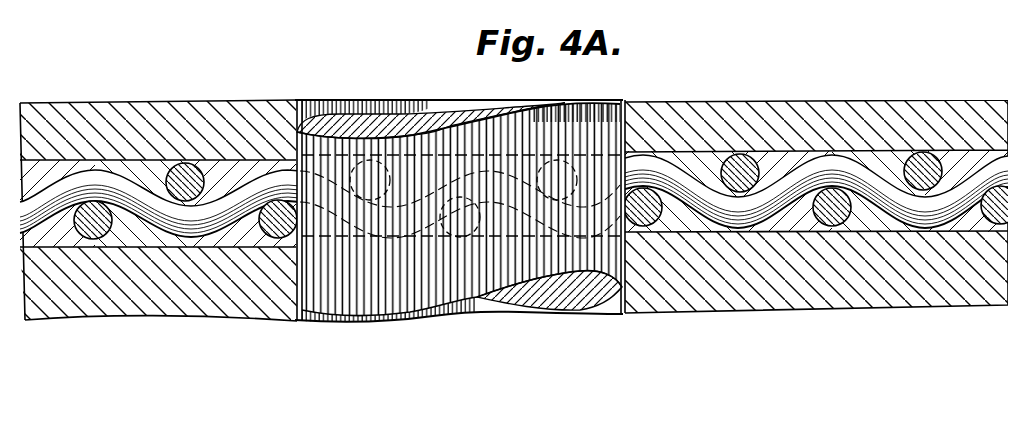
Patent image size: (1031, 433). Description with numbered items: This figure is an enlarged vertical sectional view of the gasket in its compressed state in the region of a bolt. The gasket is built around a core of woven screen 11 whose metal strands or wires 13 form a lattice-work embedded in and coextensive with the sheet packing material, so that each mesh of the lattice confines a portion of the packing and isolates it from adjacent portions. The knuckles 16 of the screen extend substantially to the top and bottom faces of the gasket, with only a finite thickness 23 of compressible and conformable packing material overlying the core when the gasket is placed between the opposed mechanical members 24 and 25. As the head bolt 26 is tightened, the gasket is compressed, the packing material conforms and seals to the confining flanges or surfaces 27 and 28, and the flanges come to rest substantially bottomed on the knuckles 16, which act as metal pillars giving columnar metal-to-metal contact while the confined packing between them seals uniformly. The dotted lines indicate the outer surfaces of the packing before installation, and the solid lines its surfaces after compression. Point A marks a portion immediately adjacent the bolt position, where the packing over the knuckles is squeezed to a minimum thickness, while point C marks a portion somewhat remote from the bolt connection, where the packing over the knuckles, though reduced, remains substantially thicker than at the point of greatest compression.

The woven screen 11 is at (273, 223).
The wires 13 is at (242, 183).
The knuckles 16 is at (514, 206).
The finite thickness 23 is at (80, 160).
The mechanical member 24 is at (682, 113).
The mechanical member 25 is at (740, 283).
The head bolt 26 is at (460, 208).
The confining flange 27 is at (890, 153).
The confining flange 28 is at (870, 233).
The point immediately adjacent bolt position A is at (453, 160).
The portion remote from bolt connection C is at (810, 228).